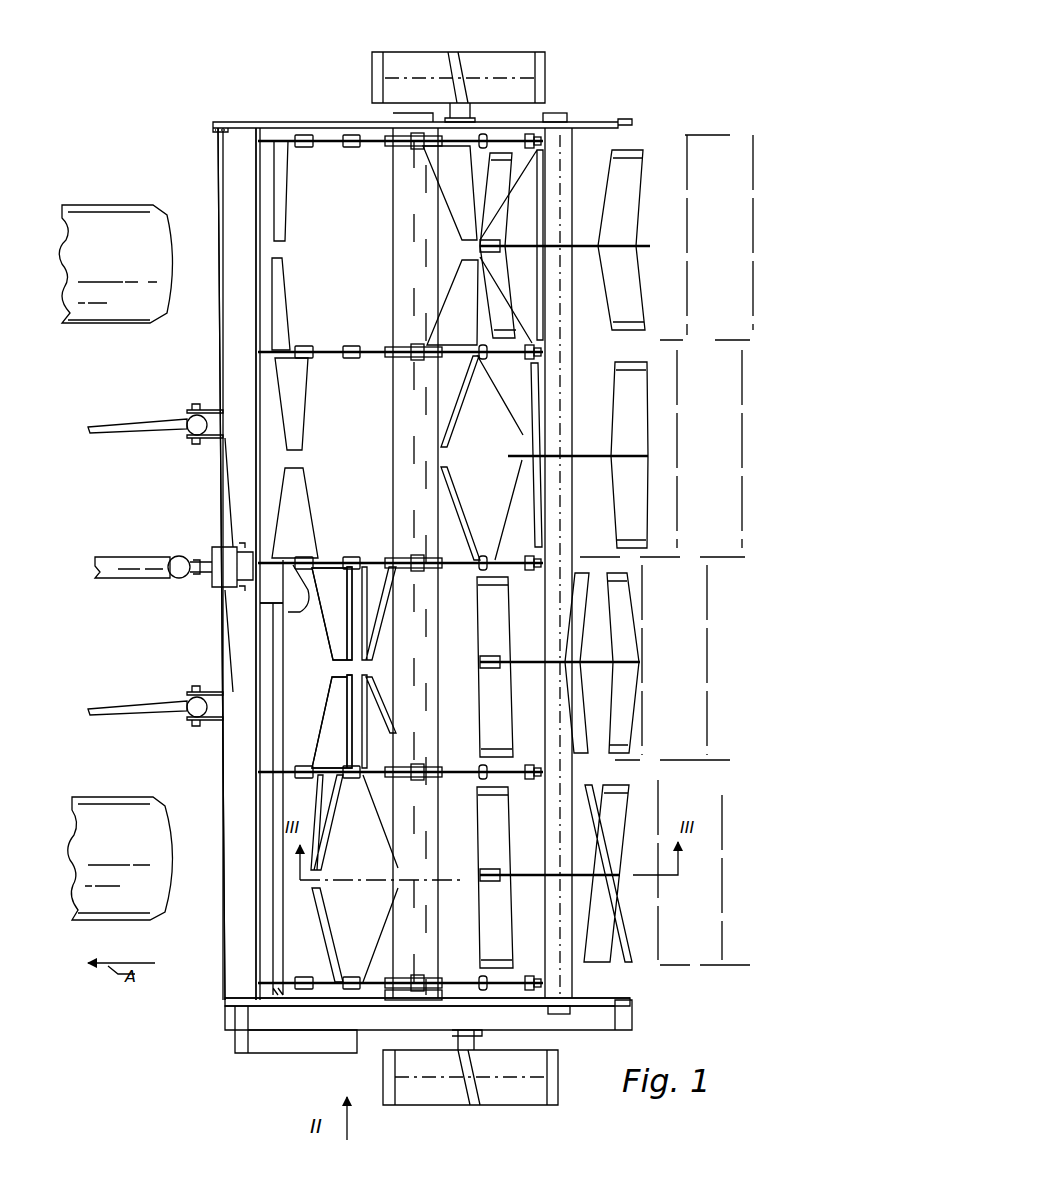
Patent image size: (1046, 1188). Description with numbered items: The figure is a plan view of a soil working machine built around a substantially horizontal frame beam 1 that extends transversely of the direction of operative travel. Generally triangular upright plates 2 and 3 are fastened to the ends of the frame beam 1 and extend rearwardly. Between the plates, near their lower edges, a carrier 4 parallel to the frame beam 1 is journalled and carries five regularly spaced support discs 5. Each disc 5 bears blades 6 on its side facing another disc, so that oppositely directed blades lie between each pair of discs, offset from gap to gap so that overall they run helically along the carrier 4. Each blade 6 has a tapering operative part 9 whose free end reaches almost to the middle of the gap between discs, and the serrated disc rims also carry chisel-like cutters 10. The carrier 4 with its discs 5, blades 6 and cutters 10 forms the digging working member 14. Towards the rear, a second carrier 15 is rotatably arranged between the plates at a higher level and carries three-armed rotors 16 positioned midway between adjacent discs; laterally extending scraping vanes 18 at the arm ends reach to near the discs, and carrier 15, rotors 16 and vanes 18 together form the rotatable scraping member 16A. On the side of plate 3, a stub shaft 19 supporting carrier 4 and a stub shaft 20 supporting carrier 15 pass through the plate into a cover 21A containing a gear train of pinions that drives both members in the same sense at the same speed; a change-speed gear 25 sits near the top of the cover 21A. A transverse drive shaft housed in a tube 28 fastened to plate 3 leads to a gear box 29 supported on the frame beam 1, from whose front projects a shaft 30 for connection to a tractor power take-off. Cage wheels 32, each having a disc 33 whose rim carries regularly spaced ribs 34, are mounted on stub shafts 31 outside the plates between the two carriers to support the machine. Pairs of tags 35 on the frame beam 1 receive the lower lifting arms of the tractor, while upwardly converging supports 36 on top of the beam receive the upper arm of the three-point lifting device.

The frame beam 1 is at (232, 744).
The upright plate 2 is at (302, 124).
The upright plate 3 is at (250, 994).
The carrier 4 is at (392, 210).
The support disc 5 is at (318, 136).
The blade 6 is at (293, 292).
The operative part 9 is at (436, 163).
The cutter 10 is at (308, 148).
The working member 14 is at (325, 520).
The carrier 15 is at (558, 188).
The rotor 16 is at (640, 250).
The scraping member 16A is at (664, 548).
The vane 18 is at (630, 204).
The stub shaft 19 is at (418, 996).
The stub shaft 20 is at (568, 122).
The cover 21A is at (620, 1017).
The change-speed gear 25 is at (312, 1040).
The tube 28 is at (272, 787).
The gear box 29 is at (292, 612).
The shaft 30 is at (212, 548).
The stub shaft 31 is at (466, 112).
The cage wheel 32 is at (370, 63).
The disc 33 is at (436, 64).
The rib 34 is at (462, 70).
The tag 35 is at (186, 434).
The support 36 is at (228, 476).